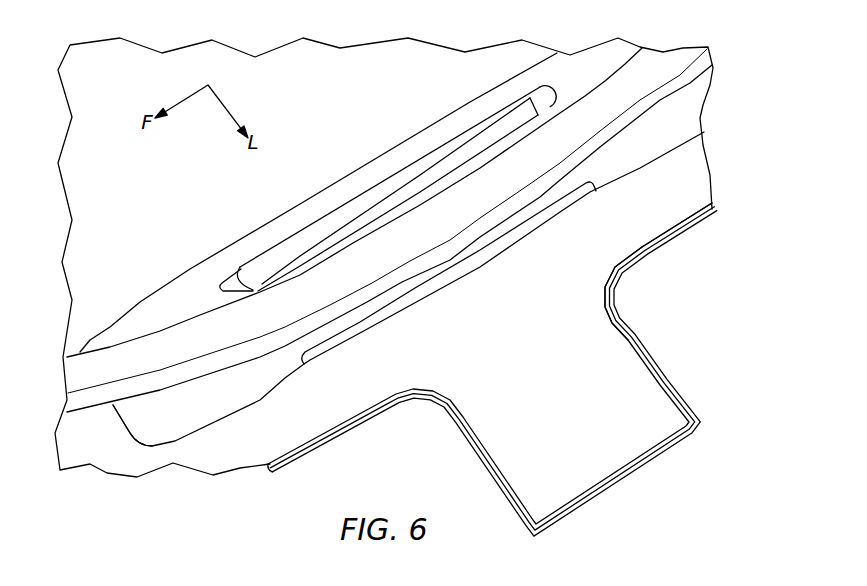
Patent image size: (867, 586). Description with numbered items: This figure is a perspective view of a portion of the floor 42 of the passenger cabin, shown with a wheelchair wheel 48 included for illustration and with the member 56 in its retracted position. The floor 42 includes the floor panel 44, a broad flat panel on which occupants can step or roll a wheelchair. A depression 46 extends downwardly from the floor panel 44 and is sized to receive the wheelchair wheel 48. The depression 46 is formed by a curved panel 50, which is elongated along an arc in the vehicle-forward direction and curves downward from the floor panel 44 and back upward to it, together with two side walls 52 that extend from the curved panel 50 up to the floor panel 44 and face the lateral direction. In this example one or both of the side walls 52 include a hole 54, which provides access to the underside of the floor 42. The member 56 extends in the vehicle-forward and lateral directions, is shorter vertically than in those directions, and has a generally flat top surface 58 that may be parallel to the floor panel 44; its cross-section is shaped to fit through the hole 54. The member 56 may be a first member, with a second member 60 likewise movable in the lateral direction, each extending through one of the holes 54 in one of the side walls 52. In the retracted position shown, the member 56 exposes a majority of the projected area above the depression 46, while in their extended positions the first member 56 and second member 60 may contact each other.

The floor 42 is at (647, 248).
The floor panel 44 is at (568, 413).
The depression 46 is at (131, 437).
The wheelchair wheel 48 is at (688, 85).
The curved panel 50 is at (187, 423).
The side wall 52 is at (183, 318).
The hole 54 is at (222, 282).
The member 56 is at (555, 105).
The top surface 58 is at (481, 237).
The second member 60 is at (605, 188).